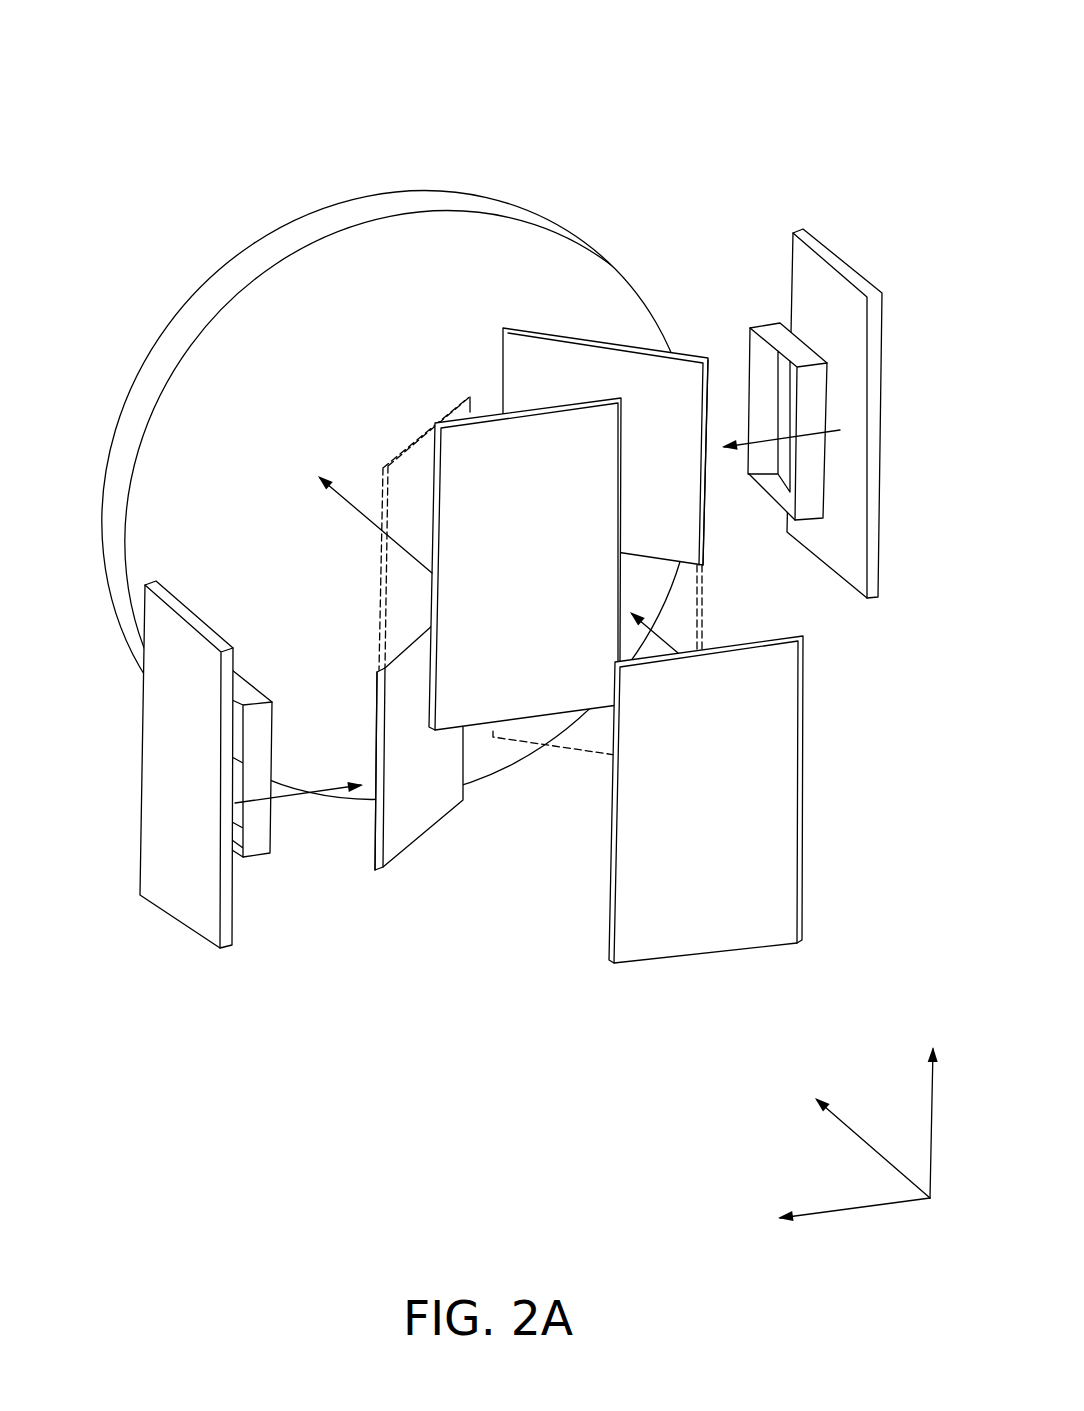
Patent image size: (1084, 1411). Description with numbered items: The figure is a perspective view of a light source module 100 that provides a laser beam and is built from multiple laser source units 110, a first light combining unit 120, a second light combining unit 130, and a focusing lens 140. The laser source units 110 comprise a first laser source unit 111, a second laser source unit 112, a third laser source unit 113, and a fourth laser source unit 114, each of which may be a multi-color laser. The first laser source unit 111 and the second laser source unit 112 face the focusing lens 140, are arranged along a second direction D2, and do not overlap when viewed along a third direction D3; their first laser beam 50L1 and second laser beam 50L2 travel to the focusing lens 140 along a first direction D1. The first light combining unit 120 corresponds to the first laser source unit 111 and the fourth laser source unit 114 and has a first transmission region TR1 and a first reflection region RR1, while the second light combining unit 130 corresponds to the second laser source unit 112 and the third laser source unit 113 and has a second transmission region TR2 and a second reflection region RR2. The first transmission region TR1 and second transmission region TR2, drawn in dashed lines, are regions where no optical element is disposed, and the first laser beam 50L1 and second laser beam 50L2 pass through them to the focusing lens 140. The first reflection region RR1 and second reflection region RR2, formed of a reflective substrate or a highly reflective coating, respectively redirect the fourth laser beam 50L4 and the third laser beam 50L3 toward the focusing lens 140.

The light source module 100 is at (476, 628).
The laser source units 110 is at (101, 93).
The first laser source unit 111 is at (677, 925).
The second laser source unit 112 is at (465, 705).
The third laser source unit 113 is at (186, 895).
The fourth laser source unit 114 is at (832, 292).
The first light combining unit 120 is at (558, 357).
The second light combining unit 130 is at (415, 820).
The focusing lens 140 is at (490, 243).
The first reflection region RR1 is at (710, 390).
The second reflection region RR2 is at (372, 852).
The first transmission region TR1 is at (705, 585).
The second transmission region TR2 is at (375, 613).
The first laser beam 50L1 is at (663, 643).
The second laser beam 50L2 is at (347, 500).
The third laser beam 50L3 is at (293, 797).
The fourth laser beam 50L4 is at (767, 433).
The first direction D1 is at (852, 1138).
The second direction D2 is at (835, 1220).
The third direction D3 is at (936, 1099).